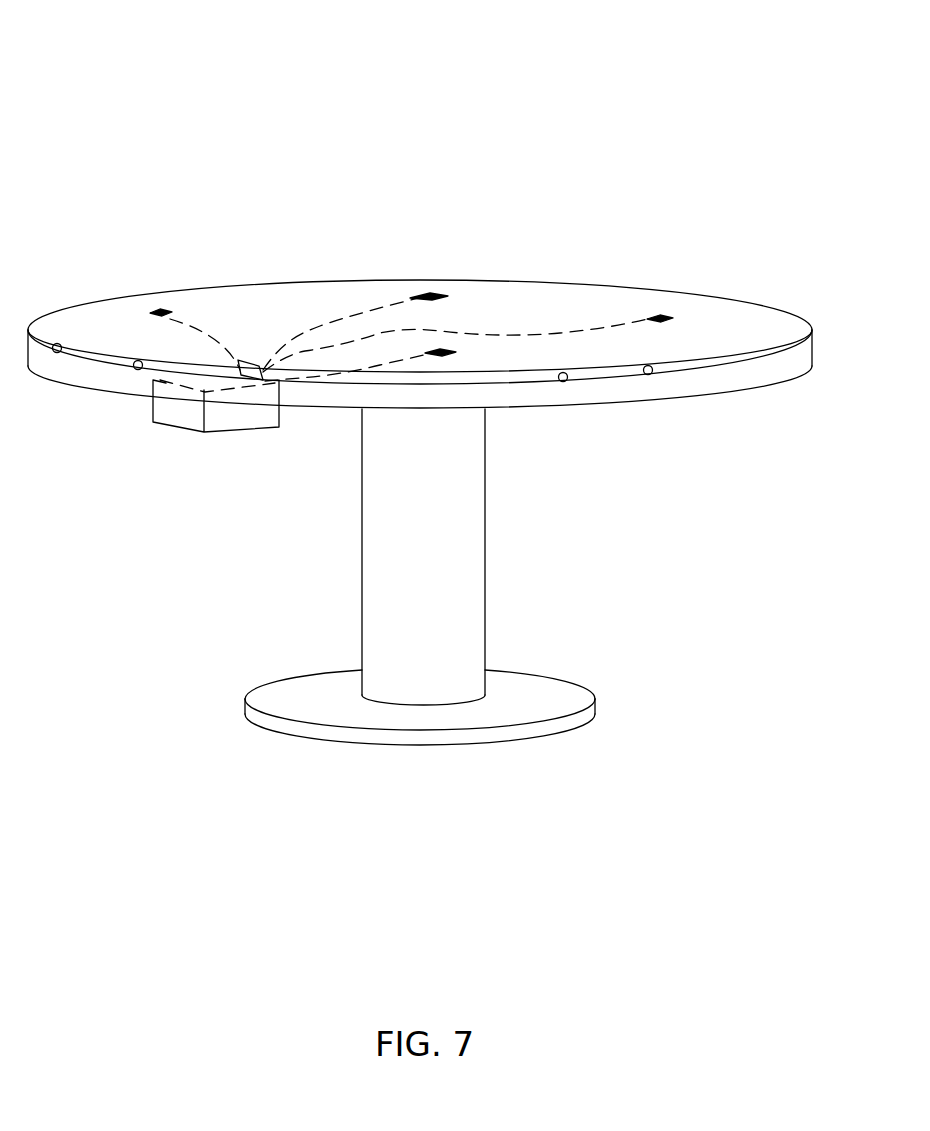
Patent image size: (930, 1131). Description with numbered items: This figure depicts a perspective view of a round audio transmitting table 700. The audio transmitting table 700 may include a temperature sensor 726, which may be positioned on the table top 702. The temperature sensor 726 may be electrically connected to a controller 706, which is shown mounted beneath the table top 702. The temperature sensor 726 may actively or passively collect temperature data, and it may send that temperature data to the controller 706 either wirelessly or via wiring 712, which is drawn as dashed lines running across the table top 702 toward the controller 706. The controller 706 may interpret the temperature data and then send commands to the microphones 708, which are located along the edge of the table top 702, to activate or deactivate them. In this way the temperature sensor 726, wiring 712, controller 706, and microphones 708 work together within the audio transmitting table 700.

The audio transmitting table 700 is at (166, 84).
The table top 702 is at (601, 285).
The controller 706 is at (225, 437).
The microphones 708 is at (137, 369).
The wiring 712 is at (336, 316).
The temperature sensor 726 is at (432, 296).